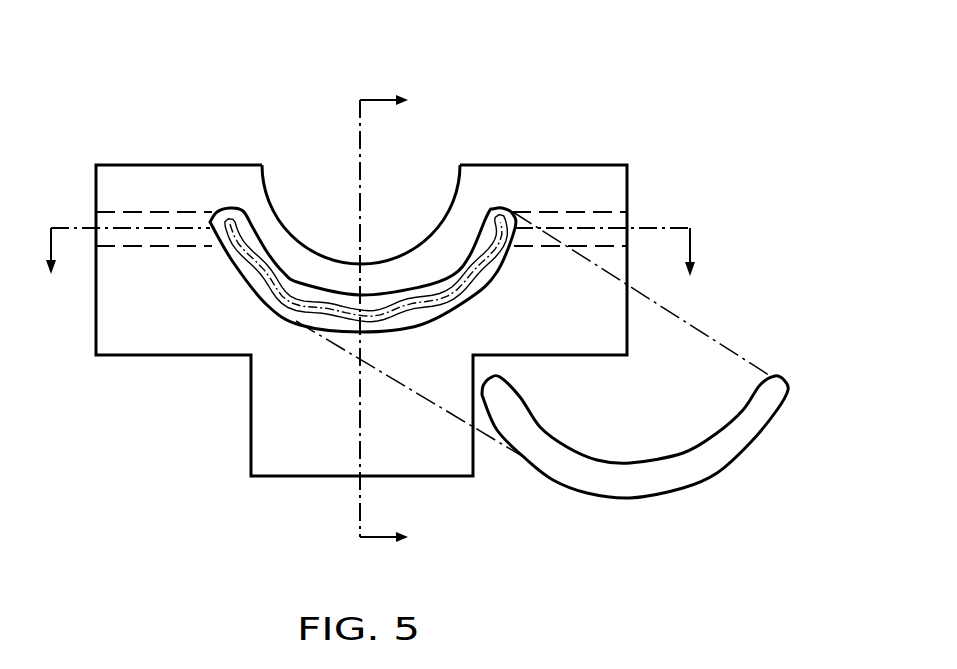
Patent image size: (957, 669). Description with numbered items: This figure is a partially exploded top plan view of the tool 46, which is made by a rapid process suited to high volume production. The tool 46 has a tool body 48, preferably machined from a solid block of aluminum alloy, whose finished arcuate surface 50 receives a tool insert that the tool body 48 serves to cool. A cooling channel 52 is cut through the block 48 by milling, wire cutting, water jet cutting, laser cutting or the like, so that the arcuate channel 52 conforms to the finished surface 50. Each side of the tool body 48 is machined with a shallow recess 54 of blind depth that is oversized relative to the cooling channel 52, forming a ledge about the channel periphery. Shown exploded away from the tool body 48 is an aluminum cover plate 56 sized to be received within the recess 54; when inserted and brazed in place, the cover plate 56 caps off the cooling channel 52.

The tool 46 is at (578, 74).
The tool body 48 is at (152, 165).
The finished arcuate surface 50 is at (270, 203).
The cooling channel 52 is at (502, 257).
The shallow recess 54 is at (468, 295).
The cover plate 56 is at (693, 492).